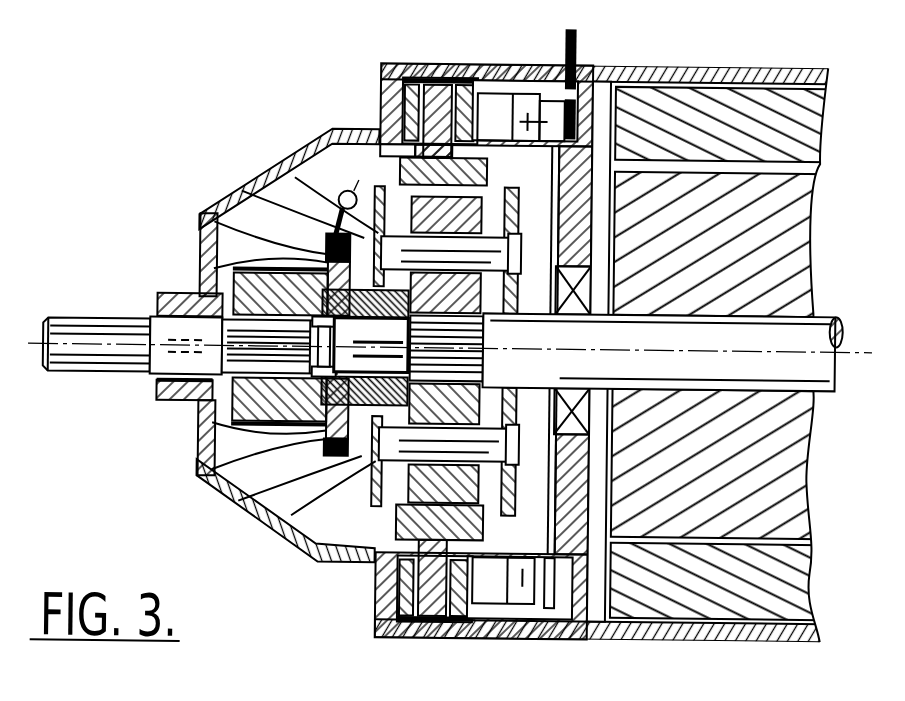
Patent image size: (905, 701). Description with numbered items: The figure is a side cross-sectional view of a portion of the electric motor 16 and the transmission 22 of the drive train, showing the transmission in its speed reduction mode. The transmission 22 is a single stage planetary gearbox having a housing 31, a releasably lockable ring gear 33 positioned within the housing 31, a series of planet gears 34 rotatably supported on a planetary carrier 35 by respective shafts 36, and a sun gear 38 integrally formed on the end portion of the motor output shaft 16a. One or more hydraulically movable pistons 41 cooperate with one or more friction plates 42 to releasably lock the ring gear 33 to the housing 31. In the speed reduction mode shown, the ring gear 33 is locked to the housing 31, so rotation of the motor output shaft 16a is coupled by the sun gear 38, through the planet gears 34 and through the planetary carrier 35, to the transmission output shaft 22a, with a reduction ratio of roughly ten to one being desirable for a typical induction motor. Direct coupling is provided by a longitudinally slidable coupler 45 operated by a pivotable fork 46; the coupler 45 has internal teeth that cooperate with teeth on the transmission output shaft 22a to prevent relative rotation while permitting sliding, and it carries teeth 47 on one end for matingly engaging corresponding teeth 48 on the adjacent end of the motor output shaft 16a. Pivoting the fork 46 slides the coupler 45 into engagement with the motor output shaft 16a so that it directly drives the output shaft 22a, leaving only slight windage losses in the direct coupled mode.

The electric motor 16 is at (762, 58).
The motor output shaft 16a is at (803, 333).
The transmission 22 is at (206, 204).
The transmission output shaft 22a is at (92, 287).
The housing 31 is at (378, 128).
The ring gear 33 is at (393, 156).
The planet gears 34 is at (395, 200).
The planetary carrier 35 is at (300, 545).
The shafts 36 is at (352, 240).
The sun gear 38 is at (588, 160).
The hydraulically movable pistons 41 is at (510, 93).
The friction plates 42 is at (418, 82).
The slidable coupler 45 is at (225, 297).
The pivotable fork 46 is at (197, 220).
The teeth 47 is at (197, 447).
The teeth 48 is at (198, 478).